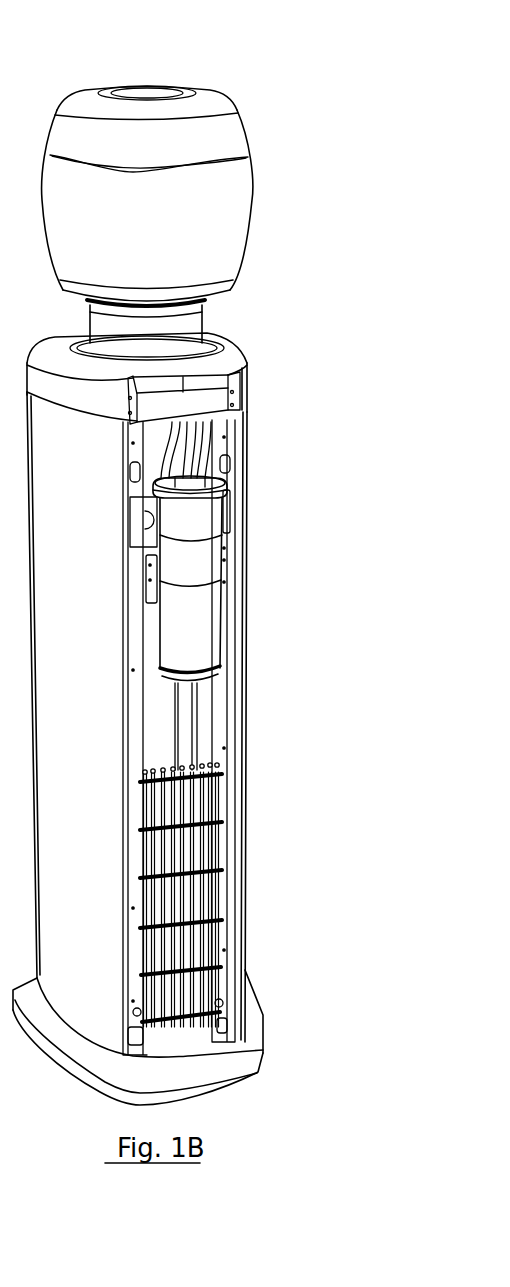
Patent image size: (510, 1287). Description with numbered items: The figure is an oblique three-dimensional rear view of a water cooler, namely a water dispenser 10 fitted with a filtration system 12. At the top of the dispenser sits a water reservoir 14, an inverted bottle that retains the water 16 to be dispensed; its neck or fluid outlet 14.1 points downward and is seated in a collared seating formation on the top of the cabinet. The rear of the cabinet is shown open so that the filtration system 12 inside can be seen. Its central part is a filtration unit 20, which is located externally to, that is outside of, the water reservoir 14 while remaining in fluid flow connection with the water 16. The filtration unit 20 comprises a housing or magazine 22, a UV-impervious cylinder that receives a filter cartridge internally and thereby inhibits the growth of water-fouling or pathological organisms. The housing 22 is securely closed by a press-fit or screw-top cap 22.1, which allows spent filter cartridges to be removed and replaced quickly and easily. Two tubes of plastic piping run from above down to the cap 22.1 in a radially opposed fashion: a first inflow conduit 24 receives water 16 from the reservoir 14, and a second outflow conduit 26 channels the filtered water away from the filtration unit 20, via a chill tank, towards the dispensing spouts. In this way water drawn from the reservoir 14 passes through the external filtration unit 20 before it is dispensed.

The water dispenser 10 is at (270, 285).
The filtration system 12 is at (270, 472).
The water reservoir 14 is at (233, 142).
The neck or fluid outlet 14.1 is at (157, 107).
The water 16 is at (235, 222).
The filtration unit 20 is at (224, 552).
The housing or magazine 22 is at (207, 613).
The cap 22.1 is at (173, 488).
The first inflow conduit 24 is at (172, 452).
The second outflow conduit 26 is at (202, 453).